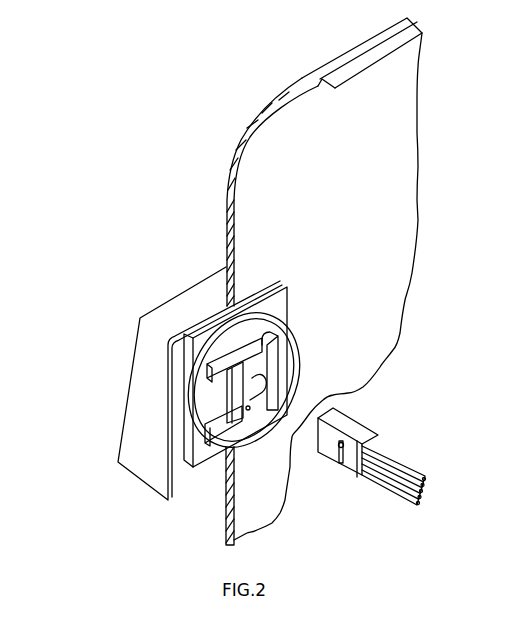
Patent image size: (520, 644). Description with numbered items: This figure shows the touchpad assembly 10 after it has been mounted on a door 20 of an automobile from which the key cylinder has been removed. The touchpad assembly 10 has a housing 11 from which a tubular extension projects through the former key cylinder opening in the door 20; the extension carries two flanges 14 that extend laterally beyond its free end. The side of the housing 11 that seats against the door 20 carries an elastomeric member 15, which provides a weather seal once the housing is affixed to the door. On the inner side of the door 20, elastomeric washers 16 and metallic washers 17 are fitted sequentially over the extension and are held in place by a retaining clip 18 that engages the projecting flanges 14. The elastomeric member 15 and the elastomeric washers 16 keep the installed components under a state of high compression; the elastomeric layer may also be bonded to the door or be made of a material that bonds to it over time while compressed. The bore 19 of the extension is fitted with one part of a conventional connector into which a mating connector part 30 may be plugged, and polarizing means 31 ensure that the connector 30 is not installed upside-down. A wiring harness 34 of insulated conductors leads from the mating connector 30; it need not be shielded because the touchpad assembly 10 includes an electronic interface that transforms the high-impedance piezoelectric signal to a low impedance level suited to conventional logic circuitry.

The touchpad assembly 10 is at (135, 490).
The housing 11 is at (198, 295).
The flanges 14 is at (263, 351).
The elastomeric member 15 is at (180, 487).
The elastomeric washers 16 is at (273, 282).
The metallic washers 17 is at (283, 318).
The retaining clip 18 is at (284, 316).
The bore 19 is at (247, 387).
The door 20 is at (282, 129).
The mating connector part 30 is at (342, 423).
The polarizing means 31 is at (338, 463).
The wiring harness 34 is at (390, 457).